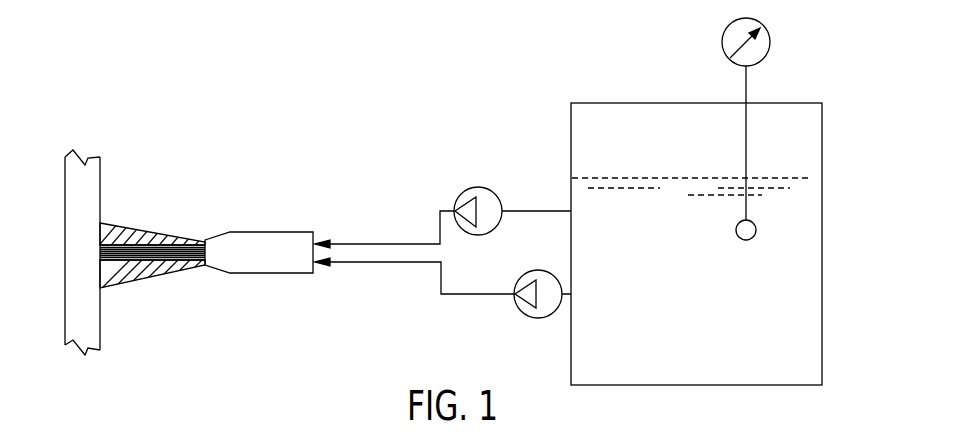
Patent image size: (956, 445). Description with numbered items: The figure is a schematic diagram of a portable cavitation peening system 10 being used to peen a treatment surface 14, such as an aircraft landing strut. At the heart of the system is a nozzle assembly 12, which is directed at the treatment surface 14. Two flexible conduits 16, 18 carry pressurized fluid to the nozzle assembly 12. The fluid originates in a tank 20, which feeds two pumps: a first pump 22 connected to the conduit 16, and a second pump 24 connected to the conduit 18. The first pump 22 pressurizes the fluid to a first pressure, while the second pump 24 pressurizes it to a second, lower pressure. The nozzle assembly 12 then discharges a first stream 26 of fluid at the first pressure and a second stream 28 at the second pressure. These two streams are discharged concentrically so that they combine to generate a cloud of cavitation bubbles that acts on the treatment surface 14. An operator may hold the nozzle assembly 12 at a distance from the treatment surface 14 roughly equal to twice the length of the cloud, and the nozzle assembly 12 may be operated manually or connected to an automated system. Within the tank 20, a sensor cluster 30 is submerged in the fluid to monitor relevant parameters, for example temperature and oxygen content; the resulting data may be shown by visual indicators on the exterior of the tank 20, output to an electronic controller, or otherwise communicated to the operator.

The portable cavitation peening system 10 is at (195, 138).
The nozzle assembly 12 is at (257, 237).
The treatment surface 14 is at (85, 217).
The flexible conduit 16 is at (378, 240).
The flexible conduit 18 is at (380, 266).
The tank 20 is at (823, 262).
The first pump 22 is at (476, 187).
The second pump 24 is at (531, 318).
The first stream 26 is at (148, 237).
The second stream 28 is at (153, 268).
The sensor cluster 30 is at (757, 228).